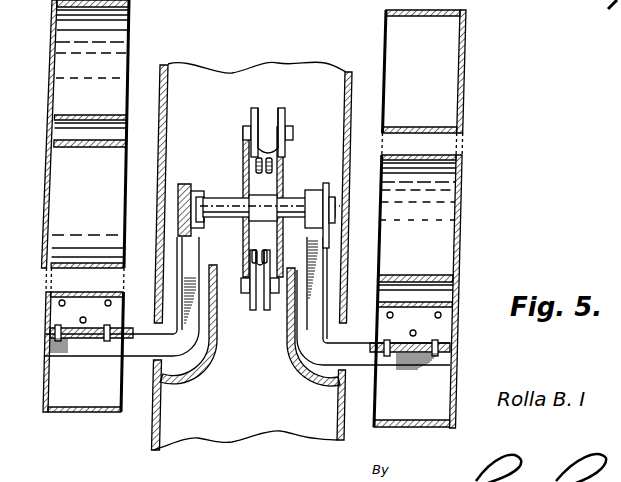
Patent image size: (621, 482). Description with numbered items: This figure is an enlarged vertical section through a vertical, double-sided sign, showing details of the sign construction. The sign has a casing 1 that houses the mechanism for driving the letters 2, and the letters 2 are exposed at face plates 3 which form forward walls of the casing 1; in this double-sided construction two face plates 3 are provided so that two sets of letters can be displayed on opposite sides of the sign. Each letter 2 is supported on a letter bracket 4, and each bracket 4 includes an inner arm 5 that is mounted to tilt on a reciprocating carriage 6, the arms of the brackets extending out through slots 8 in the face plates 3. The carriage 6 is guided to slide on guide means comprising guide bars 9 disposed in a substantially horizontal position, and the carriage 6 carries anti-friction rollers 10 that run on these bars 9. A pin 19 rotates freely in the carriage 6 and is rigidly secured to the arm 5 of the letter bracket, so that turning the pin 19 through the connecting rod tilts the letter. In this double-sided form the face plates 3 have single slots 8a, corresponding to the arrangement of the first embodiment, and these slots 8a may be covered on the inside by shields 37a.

The casing 1 is at (338, 66).
The letters 2 is at (51, 36).
The face plate 3 is at (158, 77).
The letter bracket 4 is at (135, 328).
The inner arm 5 is at (196, 266).
The reciprocating carriage 6 is at (246, 173).
The slots 8 is at (153, 368).
The single slots 8a is at (337, 374).
The guide bars 9 is at (275, 170).
The anti-friction rollers 10 is at (268, 118).
The pin 19 is at (178, 195).
The shields 37a is at (210, 353).